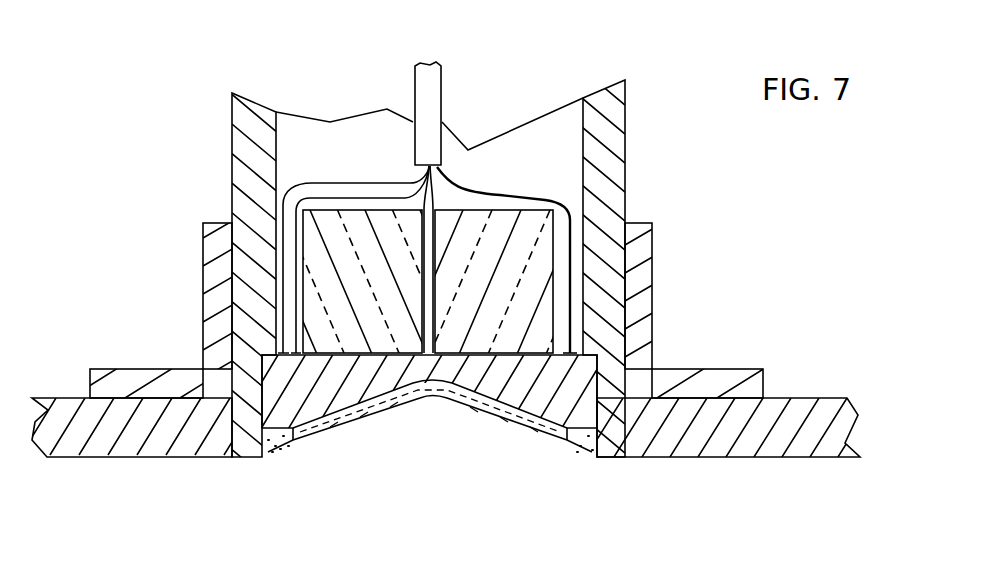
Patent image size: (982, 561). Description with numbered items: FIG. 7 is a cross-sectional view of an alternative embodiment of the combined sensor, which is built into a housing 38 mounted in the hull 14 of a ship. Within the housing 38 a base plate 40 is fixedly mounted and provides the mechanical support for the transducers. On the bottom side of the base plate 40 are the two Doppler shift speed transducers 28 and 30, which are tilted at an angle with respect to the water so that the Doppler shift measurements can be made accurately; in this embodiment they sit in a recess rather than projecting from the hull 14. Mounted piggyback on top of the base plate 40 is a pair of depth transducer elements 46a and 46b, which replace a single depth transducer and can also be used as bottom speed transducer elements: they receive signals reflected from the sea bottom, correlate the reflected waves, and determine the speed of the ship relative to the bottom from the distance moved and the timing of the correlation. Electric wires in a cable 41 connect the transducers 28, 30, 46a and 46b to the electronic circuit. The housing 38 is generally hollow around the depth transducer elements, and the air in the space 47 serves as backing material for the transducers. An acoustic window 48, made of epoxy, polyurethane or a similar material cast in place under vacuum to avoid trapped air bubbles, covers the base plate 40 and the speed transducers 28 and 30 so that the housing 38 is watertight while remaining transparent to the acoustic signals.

The hull 14 is at (797, 432).
The acoustic speed transducer 28 is at (352, 413).
The acoustic speed transducer 30 is at (490, 420).
The housing 38 is at (607, 140).
The base plate 40 is at (580, 378).
The cable 41 is at (433, 82).
The depth transducer element 46a is at (353, 247).
The depth transducer element 46b is at (522, 240).
The space 47 is at (535, 157).
The acoustic window 48 is at (278, 452).